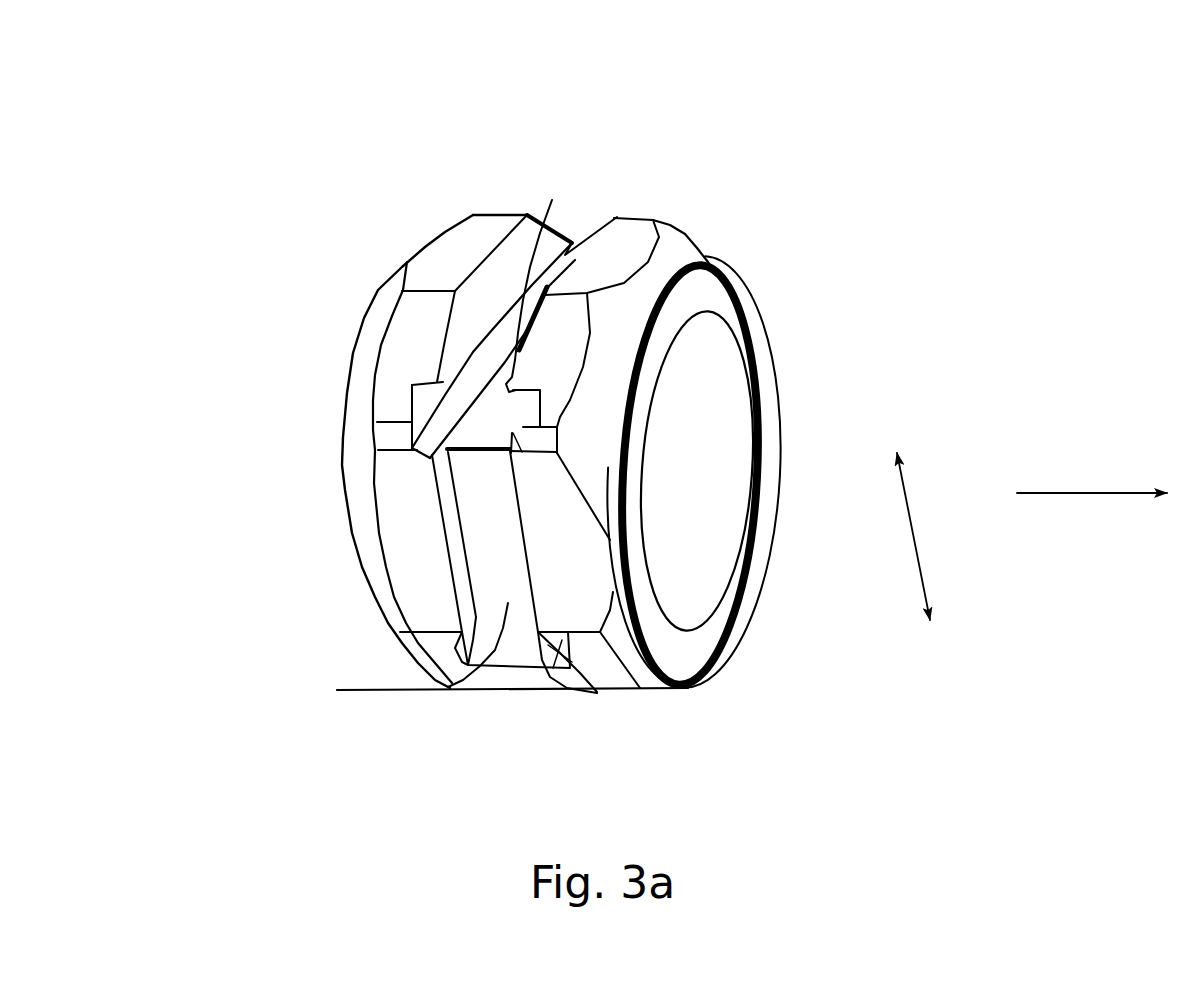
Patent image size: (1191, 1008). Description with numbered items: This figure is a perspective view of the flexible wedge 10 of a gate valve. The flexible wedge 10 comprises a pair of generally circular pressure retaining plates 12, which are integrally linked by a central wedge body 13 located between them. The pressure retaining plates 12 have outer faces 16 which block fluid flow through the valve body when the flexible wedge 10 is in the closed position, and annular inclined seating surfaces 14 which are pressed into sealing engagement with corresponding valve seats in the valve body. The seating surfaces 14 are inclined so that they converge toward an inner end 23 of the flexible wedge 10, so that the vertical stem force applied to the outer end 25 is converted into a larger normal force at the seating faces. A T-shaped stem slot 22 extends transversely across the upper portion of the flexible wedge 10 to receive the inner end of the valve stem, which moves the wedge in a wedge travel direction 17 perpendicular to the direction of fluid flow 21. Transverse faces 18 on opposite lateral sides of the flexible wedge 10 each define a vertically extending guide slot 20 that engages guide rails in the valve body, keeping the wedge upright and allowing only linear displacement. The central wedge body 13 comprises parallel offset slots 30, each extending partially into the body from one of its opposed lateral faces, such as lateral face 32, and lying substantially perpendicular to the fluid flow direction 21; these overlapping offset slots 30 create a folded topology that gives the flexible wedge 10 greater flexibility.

The flexible wedge 10 is at (669, 368).
The pressure retaining plates 12 is at (638, 408).
The central wedge body 13 is at (442, 698).
The seating surfaces 14 is at (826, 537).
The outer faces 16 is at (783, 471).
The wedge travel direction 17 is at (970, 481).
The transverse faces 18 is at (338, 423).
The guide slot 20 is at (382, 478).
The direction of fluid flow 21 is at (1092, 431).
The T-shaped stem slot 22 is at (409, 350).
The inner end 23 is at (844, 674).
The outer end 25 is at (690, 396).
The offset slots 30 is at (624, 413).
The lateral face 32 is at (493, 650).